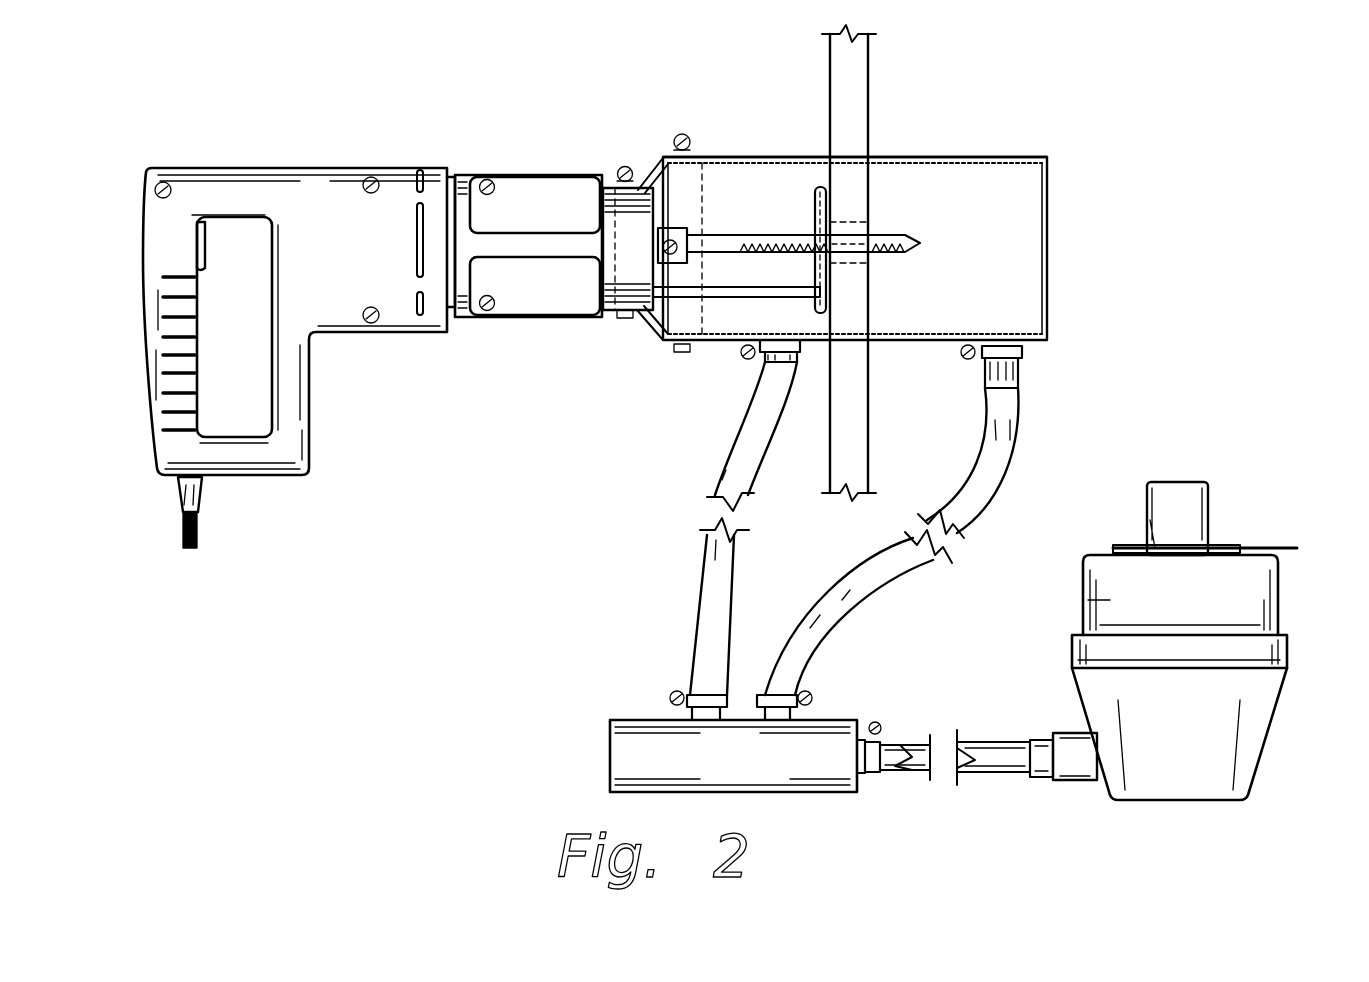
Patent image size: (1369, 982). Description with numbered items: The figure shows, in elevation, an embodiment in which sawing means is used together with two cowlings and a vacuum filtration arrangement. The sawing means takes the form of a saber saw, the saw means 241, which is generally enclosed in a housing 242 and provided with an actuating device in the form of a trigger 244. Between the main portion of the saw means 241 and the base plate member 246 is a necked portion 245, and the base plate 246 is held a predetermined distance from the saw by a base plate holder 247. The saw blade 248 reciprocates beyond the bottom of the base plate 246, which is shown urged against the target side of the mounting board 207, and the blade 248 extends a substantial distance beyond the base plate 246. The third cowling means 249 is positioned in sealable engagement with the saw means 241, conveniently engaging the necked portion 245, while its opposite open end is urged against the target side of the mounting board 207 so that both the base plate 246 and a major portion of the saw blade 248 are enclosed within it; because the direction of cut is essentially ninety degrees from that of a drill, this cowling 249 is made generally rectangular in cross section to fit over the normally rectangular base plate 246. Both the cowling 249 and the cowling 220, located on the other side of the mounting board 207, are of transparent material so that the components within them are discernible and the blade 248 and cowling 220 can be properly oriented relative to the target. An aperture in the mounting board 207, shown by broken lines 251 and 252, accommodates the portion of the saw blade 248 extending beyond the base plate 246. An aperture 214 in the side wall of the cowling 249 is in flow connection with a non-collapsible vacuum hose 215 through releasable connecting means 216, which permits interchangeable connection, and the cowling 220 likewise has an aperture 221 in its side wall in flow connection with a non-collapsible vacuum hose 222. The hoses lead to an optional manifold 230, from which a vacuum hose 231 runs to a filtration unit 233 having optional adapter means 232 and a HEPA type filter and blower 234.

The mounting board 207 is at (870, 92).
The aperture 214 is at (783, 336).
The non-collapsible vacuum hose 215 is at (700, 560).
The releasable connecting means 216 is at (753, 370).
The cowling 220 is at (1045, 220).
The aperture 221 is at (998, 337).
The non-collapsible vacuum hose 222 is at (1007, 478).
The manifold 230 is at (642, 720).
The vacuum hose 231 is at (917, 737).
The adapter means 232 is at (1073, 730).
The filtration unit 233 is at (1083, 578).
The HEPA type filter and blower 234 is at (1197, 480).
The saw means 241 is at (315, 167).
The housing 242 is at (352, 264).
The trigger 244 is at (203, 234).
The necked portion 245 is at (608, 187).
The base plate member 246 is at (813, 217).
The base plate holder 247 is at (662, 338).
The saw blade 248 is at (738, 233).
The third cowling means 249 is at (803, 157).
The broken lines 251 is at (850, 223).
The broken lines 252 is at (853, 265).